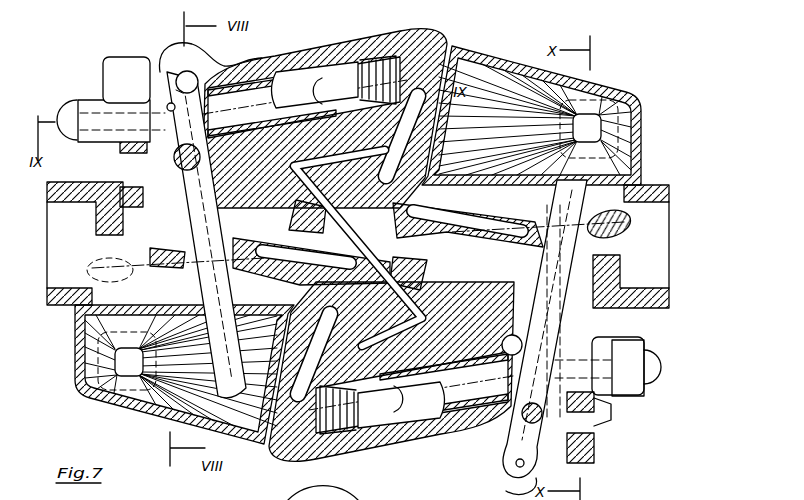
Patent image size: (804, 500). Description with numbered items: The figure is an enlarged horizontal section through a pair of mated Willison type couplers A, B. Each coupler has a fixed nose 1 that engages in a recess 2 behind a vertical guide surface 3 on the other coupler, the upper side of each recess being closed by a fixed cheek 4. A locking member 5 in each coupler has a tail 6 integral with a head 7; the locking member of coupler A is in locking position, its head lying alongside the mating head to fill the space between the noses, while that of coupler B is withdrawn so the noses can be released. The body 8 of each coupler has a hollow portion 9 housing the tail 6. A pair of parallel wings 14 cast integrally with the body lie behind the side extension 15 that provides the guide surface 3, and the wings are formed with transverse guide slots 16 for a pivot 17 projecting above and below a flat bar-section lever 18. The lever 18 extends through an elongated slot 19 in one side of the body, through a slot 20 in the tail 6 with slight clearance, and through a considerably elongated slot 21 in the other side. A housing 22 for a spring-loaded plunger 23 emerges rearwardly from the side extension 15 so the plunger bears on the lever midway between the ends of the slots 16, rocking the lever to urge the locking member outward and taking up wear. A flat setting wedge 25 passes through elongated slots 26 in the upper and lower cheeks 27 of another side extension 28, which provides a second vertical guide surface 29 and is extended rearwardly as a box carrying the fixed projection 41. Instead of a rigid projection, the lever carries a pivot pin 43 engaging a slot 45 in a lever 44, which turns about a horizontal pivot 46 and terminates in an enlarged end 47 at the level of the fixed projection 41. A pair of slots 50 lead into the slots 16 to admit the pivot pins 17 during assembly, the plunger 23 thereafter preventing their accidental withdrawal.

The fixed nose 1 is at (286, 248).
The recess 2 is at (268, 240).
The vertical guide surface 3 is at (446, 50).
The fixed cheek 4 is at (560, 240).
The locking member 5 is at (258, 231).
The tail 6 is at (88, 266).
The head 7 is at (366, 244).
The body 8 is at (73, 183).
The hollow portion 9 is at (63, 249).
The wings 14 is at (180, 45).
The side extension 15 is at (412, 40).
The guide slots 16 is at (180, 72).
The pivot 17 is at (201, 157).
The lever 18 is at (568, 194).
The elongated slot 19 is at (140, 263).
The slot 20 is at (193, 245).
The elongated slot 21 is at (511, 159).
The housing 22 is at (303, 52).
The spring-loaded plunger 23 is at (279, 66).
The setting wedge 25 is at (480, 60).
The elongated slots 26 is at (501, 158).
The cheeks 27 is at (453, 124).
The side extension 28 is at (508, 62).
The vertical guide surface 29 is at (462, 58).
The fixed projection 41 is at (641, 128).
The pivot pin 43 is at (100, 205).
The lever 44 is at (100, 100).
The slot 45 is at (135, 201).
The horizontal pivot 46 is at (77, 102).
The enlarged end 47 is at (128, 58).
The slots 50 is at (236, 66).
The coupler A is at (358, 38).
The coupler B is at (613, 84).